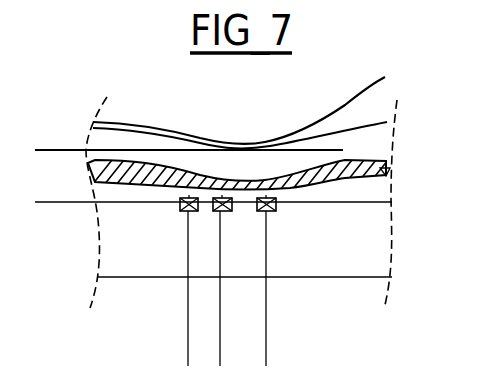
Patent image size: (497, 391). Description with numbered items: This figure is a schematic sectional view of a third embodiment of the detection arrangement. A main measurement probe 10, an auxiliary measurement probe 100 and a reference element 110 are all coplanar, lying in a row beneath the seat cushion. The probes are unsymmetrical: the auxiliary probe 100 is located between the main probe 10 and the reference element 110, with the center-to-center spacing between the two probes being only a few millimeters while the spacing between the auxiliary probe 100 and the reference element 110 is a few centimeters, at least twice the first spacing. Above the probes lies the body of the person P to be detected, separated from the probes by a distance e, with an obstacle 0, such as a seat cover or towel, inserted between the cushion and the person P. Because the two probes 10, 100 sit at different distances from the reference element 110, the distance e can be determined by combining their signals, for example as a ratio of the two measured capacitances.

The main measurement probe 10 is at (184, 211).
The auxiliary measurement probe 100 is at (219, 212).
The reference element 110 is at (272, 211).
The person P is at (261, 171).
The obstacle 0 is at (390, 173).
The distance e is at (43, 151).